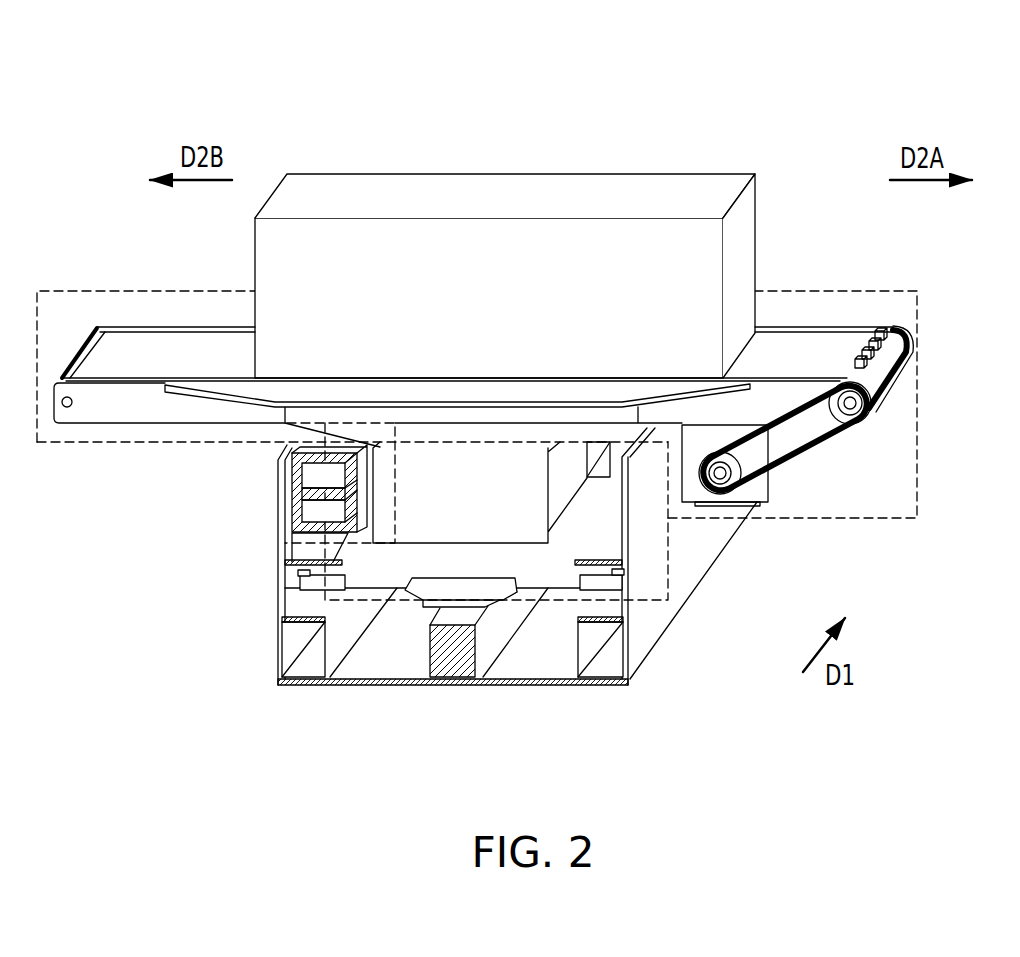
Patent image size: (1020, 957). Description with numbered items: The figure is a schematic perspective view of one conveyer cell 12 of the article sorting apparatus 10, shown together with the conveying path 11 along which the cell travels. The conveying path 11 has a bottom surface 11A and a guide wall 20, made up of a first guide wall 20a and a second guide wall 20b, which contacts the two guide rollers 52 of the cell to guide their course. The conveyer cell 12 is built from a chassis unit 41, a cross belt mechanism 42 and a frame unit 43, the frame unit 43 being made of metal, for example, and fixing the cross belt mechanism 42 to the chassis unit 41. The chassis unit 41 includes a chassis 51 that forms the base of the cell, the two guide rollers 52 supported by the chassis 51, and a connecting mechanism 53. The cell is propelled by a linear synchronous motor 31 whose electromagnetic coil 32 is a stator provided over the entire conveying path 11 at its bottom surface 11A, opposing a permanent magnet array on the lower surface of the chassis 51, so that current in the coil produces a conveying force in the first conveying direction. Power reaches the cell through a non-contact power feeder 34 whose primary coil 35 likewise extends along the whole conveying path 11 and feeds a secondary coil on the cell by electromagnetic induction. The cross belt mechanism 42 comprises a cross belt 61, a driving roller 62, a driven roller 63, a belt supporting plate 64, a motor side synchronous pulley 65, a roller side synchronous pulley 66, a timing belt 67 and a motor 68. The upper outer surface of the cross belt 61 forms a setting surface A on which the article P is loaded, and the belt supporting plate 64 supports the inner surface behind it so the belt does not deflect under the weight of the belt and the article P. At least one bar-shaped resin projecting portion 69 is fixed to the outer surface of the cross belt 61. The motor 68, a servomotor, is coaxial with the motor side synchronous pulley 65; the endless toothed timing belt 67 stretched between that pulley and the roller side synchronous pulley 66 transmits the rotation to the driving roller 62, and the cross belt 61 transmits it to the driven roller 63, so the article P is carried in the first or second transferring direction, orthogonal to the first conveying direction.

The printing apparatus 10 is at (93, 150).
The conveying path 11 is at (418, 602).
The bottom surface of the conveying path 11A is at (503, 667).
The conveyer cell 12 is at (768, 135).
The article P is at (692, 176).
The setting surface A is at (203, 338).
The guide wall 20 is at (451, 642).
The first guide wall 20a is at (290, 600).
The second guide wall 20b is at (293, 603).
The linear synchronous motor 31 is at (419, 658).
The electromagnetic coil 32 is at (450, 668).
The non-contact power feeder 34 is at (272, 462).
The primary coil 35 is at (297, 490).
The chassis unit 41 is at (388, 612).
The cross belt mechanism 42 is at (925, 442).
The frame unit 43 is at (118, 415).
The chassis 51 is at (565, 552).
The guide roller 52 is at (300, 580).
The connecting mechanism 53 is at (488, 585).
The cross belt 61 is at (783, 342).
The driving roller 62 is at (856, 402).
The driven roller 63 is at (67, 408).
The belt supporting plate 64 is at (555, 388).
The motor side synchronous pulley 65 is at (732, 477).
The roller side synchronous pulley 66 is at (866, 410).
The timing belt 67 is at (817, 438).
The motor 68 is at (757, 497).
The projecting portion 69 is at (888, 320).